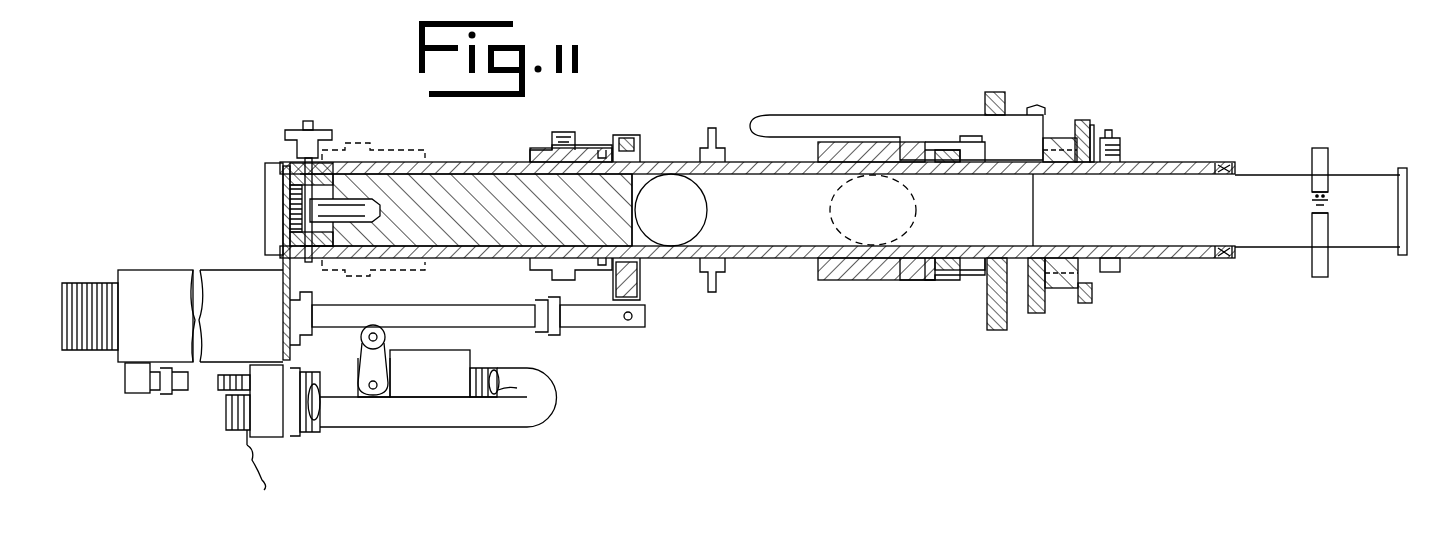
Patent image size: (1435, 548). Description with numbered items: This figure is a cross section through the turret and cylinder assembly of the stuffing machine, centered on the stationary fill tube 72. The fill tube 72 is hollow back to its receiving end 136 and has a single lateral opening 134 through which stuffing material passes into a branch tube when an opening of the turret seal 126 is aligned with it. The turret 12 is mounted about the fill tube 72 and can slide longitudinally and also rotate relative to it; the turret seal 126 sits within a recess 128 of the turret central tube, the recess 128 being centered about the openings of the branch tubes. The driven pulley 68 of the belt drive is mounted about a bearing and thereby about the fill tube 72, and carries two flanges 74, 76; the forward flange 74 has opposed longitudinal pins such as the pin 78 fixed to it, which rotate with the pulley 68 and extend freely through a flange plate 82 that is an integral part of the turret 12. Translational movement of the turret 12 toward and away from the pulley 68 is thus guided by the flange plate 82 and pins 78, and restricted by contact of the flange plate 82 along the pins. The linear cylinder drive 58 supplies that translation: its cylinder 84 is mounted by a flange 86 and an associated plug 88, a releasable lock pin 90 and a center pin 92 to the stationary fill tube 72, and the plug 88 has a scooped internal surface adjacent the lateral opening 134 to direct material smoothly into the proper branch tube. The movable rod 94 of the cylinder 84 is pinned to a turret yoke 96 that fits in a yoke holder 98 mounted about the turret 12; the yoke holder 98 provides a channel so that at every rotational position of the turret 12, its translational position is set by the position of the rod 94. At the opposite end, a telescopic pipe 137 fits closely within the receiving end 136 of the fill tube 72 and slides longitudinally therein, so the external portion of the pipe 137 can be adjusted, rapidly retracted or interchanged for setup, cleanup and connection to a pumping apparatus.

The turret 12 is at (680, 152).
The cylinder drive 58 is at (213, 262).
The driven pulley 68 is at (1058, 295).
The fill tube 72 is at (435, 158).
The forward flange 74 is at (1042, 106).
The flange 76 is at (1086, 124).
The longitudinal pin 78 is at (822, 120).
The flange plate 82 is at (997, 332).
The cylinder 84 is at (162, 272).
The flange 86 is at (283, 262).
The plug 88 is at (452, 183).
The releasable lock pin 90 is at (317, 124).
The center pin 92 is at (290, 190).
The movable rod 94 is at (440, 308).
The turret yoke 96 is at (641, 148).
The yoke holder 98 is at (631, 136).
The turret seal 126 is at (906, 160).
The recess 128 is at (890, 160).
The lateral opening 134 is at (700, 225).
The receiving end 136 is at (1172, 165).
The telescopic pipe 137 is at (1280, 236).